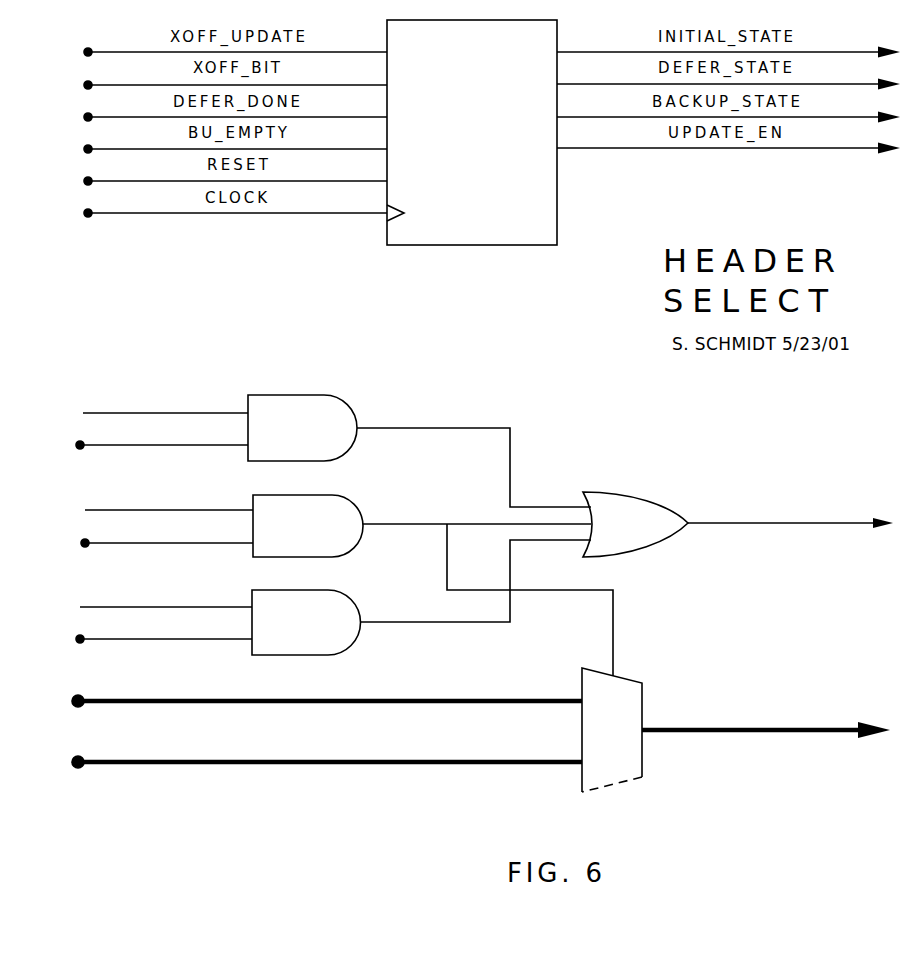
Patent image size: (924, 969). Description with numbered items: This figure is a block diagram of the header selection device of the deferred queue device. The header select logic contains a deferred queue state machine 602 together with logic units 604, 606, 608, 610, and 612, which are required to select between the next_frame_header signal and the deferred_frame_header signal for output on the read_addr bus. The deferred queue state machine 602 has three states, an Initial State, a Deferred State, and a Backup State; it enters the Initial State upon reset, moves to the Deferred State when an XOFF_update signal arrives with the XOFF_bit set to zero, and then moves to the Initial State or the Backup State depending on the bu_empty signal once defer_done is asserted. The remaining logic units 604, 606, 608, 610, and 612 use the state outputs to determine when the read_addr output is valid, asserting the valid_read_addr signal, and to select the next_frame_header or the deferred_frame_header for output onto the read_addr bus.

The deferred queue state machine 602 is at (472, 132).
The logic unit 604 is at (333, 447).
The logic unit 606 is at (347, 582).
The logic unit 608 is at (333, 597).
The logic unit 610 is at (738, 524).
The logic unit 612 is at (481, 730).